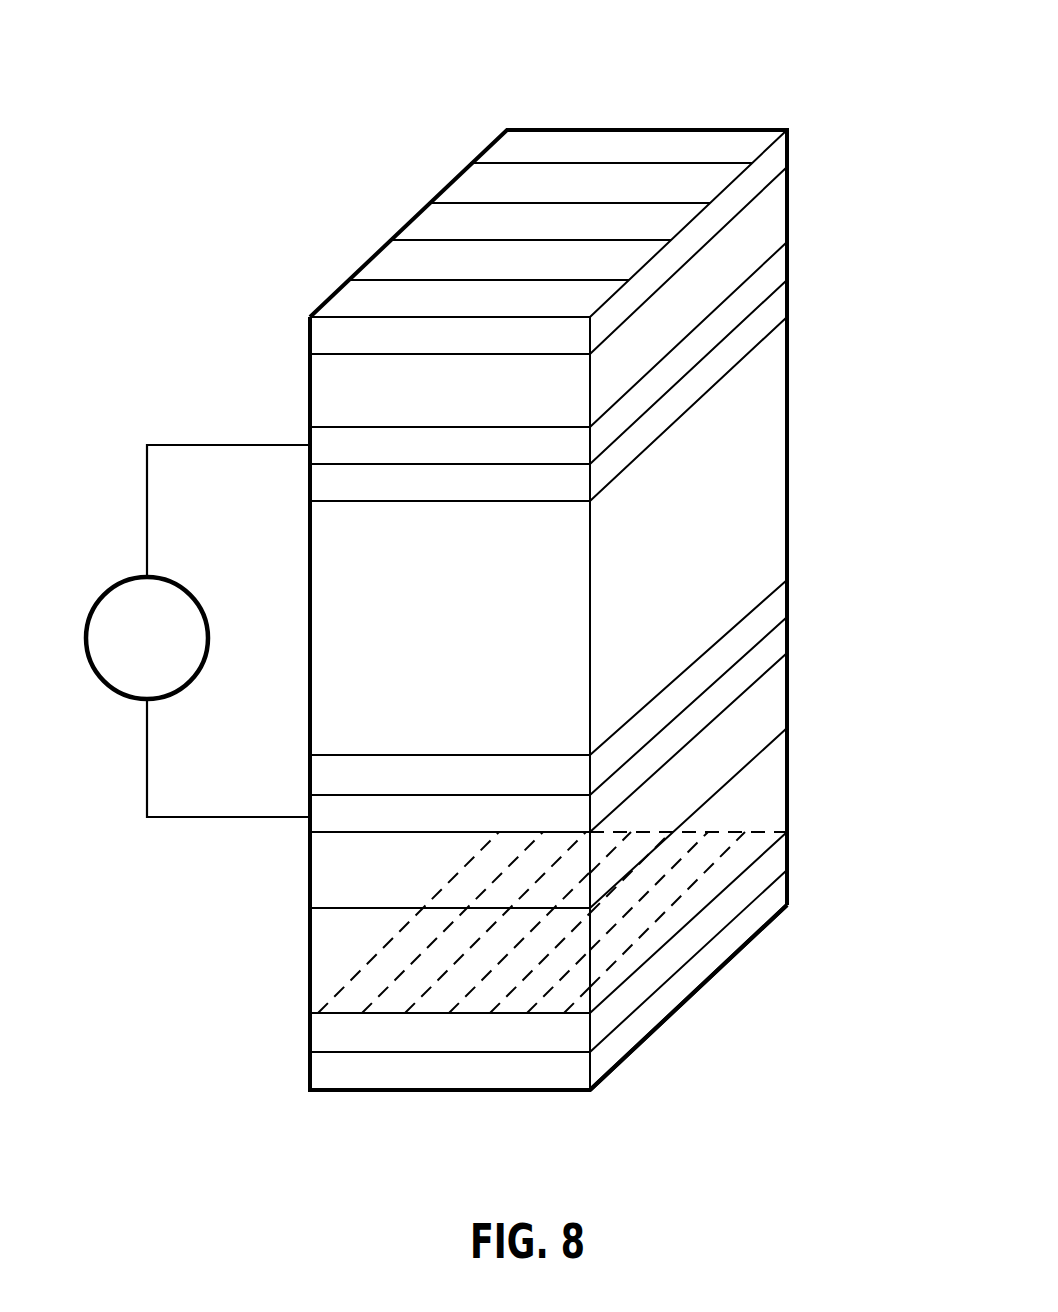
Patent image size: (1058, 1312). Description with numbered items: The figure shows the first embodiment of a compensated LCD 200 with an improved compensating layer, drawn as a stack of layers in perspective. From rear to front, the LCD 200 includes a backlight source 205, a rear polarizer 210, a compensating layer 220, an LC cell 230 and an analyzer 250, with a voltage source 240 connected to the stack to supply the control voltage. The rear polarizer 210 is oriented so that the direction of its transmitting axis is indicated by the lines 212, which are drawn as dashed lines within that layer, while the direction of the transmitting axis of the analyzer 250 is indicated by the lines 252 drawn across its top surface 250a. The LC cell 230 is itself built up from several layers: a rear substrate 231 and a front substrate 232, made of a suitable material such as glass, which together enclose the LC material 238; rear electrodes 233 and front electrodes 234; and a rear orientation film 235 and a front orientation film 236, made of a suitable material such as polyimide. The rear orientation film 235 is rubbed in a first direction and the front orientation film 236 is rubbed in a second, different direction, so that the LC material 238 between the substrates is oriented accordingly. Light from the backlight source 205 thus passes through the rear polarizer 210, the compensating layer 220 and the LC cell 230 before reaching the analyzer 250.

The compensated LCD 200 is at (940, 46).
The backlight source 205 is at (788, 897).
The rear polarizer 210 is at (788, 862).
The lines 212 is at (653, 926).
The compensating layer 220 is at (788, 783).
The rear substrate 231 is at (788, 703).
The rear electrodes 233 is at (788, 638).
The rear orientation film 235 is at (788, 598).
The LC cell 230 is at (758, 473).
The LC material 238 is at (545, 558).
The front orientation film 236 is at (788, 303).
The front electrodes 234 is at (788, 265).
The front substrate 232 is at (788, 217).
The analyzer 250 is at (788, 152).
The surface 250a is at (485, 188).
The lines 252 is at (668, 165).
The voltage source 240 is at (102, 602).